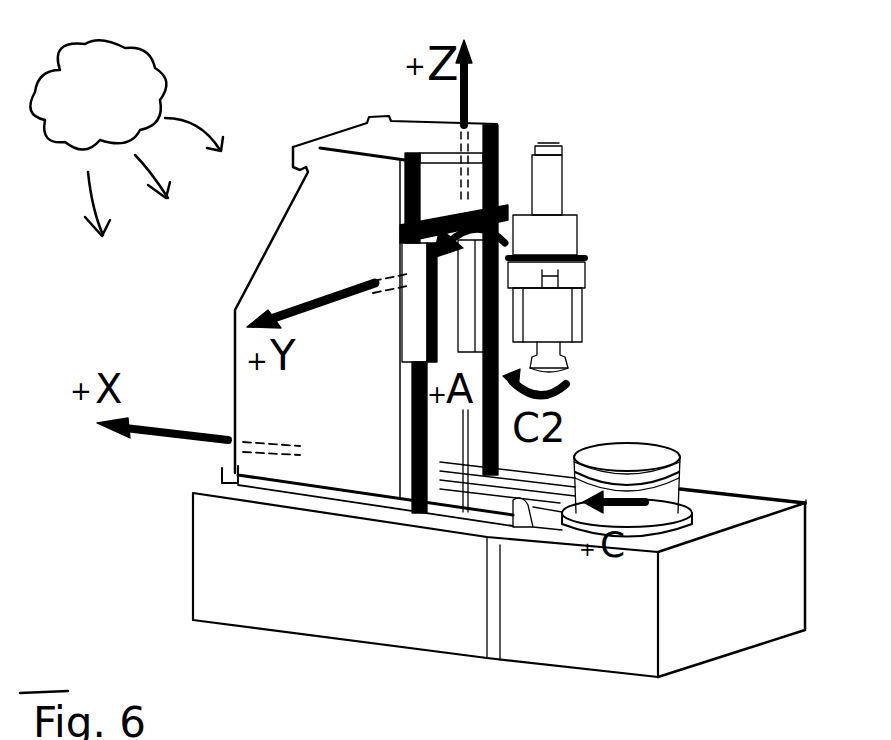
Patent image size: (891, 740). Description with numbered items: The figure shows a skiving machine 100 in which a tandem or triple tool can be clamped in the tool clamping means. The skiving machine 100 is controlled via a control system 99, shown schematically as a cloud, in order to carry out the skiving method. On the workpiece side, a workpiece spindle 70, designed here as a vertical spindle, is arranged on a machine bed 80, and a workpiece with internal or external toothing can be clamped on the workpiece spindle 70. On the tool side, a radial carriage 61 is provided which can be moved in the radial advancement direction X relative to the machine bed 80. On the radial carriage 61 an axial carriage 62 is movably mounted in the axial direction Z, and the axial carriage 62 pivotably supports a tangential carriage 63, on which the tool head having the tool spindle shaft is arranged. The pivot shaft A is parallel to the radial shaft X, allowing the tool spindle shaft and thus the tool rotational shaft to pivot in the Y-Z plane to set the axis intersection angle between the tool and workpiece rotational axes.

The control system 99 is at (98, 94).
The skiving machine 100 is at (855, 143).
The radial carriage 61 is at (367, 321).
The axial carriage 62 is at (498, 185).
The tangential carriage 63 is at (485, 308).
The workpiece spindle 70 is at (663, 500).
The machine bed 80 is at (717, 628).